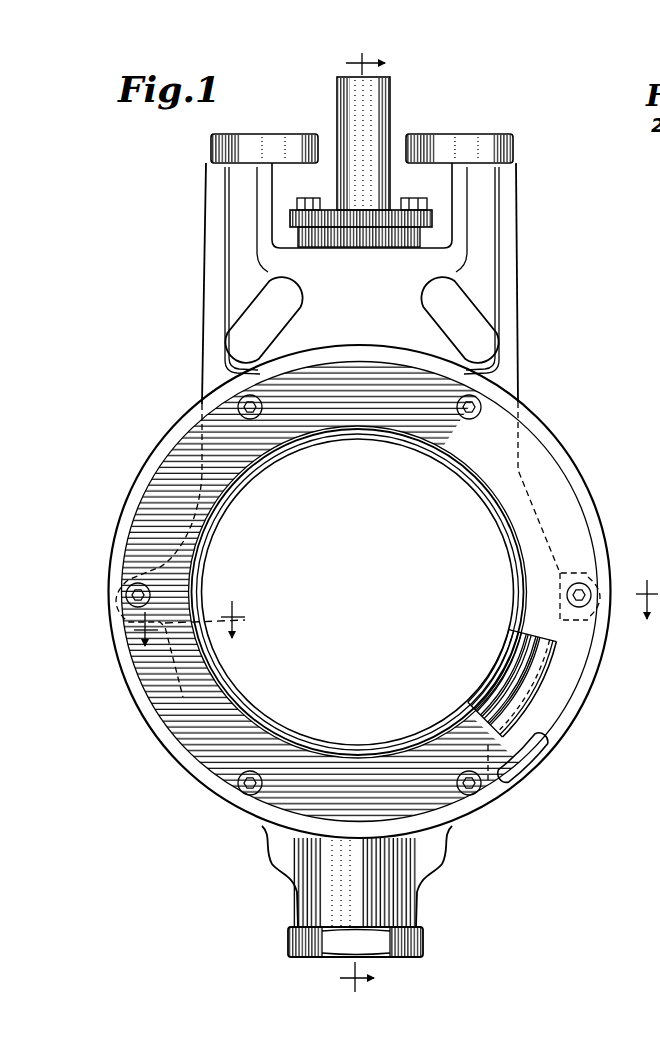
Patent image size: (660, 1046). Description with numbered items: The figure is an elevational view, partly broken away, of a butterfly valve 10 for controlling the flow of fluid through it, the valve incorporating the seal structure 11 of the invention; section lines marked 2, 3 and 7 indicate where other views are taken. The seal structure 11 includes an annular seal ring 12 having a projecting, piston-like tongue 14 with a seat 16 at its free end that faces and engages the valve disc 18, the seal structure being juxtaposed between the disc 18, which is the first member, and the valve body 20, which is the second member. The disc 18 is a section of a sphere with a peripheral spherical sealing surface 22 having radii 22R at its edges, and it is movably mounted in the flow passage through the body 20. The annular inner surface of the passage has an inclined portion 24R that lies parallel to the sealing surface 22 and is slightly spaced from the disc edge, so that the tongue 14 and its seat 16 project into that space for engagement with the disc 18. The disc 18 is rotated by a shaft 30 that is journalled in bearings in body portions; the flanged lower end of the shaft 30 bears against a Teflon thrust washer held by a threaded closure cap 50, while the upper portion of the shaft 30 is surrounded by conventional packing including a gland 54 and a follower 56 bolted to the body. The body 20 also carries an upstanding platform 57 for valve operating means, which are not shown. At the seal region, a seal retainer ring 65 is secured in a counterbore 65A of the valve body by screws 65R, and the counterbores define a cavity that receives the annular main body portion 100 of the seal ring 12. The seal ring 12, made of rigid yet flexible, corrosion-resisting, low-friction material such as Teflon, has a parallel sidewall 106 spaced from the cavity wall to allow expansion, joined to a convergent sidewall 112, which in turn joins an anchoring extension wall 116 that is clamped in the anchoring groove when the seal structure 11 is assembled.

The butterfly valve 10 is at (490, 95).
The seal structure 11 is at (482, 648).
The annular seal ring 12 is at (485, 693).
The projecting tongue 14 is at (514, 646).
The seat 16 is at (497, 680).
The valve disc 18 is at (368, 581).
The valve body 20 is at (407, 855).
The peripheral spherical sealing surface 22 is at (520, 637).
The radii at edges of sealing surface 22R is at (478, 488).
The portion of annular inner surface 24R is at (237, 490).
The shaft 30 is at (340, 96).
The threaded closure cap 50 is at (292, 939).
The gland 54 is at (365, 236).
The follower 56 is at (295, 218).
The upstanding platform 57 is at (213, 140).
The seal retainer ring 65 is at (521, 808).
The counterbore 65A is at (538, 745).
The screws 65R is at (240, 400).
The annular main body portion 100 is at (487, 701).
The ring sidewall 106 is at (543, 652).
The convergent ring sidewall 112 is at (530, 676).
The anchoring extension wall 116 is at (520, 705).
The section line 2- 2 is at (375, 525).
The section line 3- 3 is at (647, 614).
The section line 7- 7 is at (192, 635).